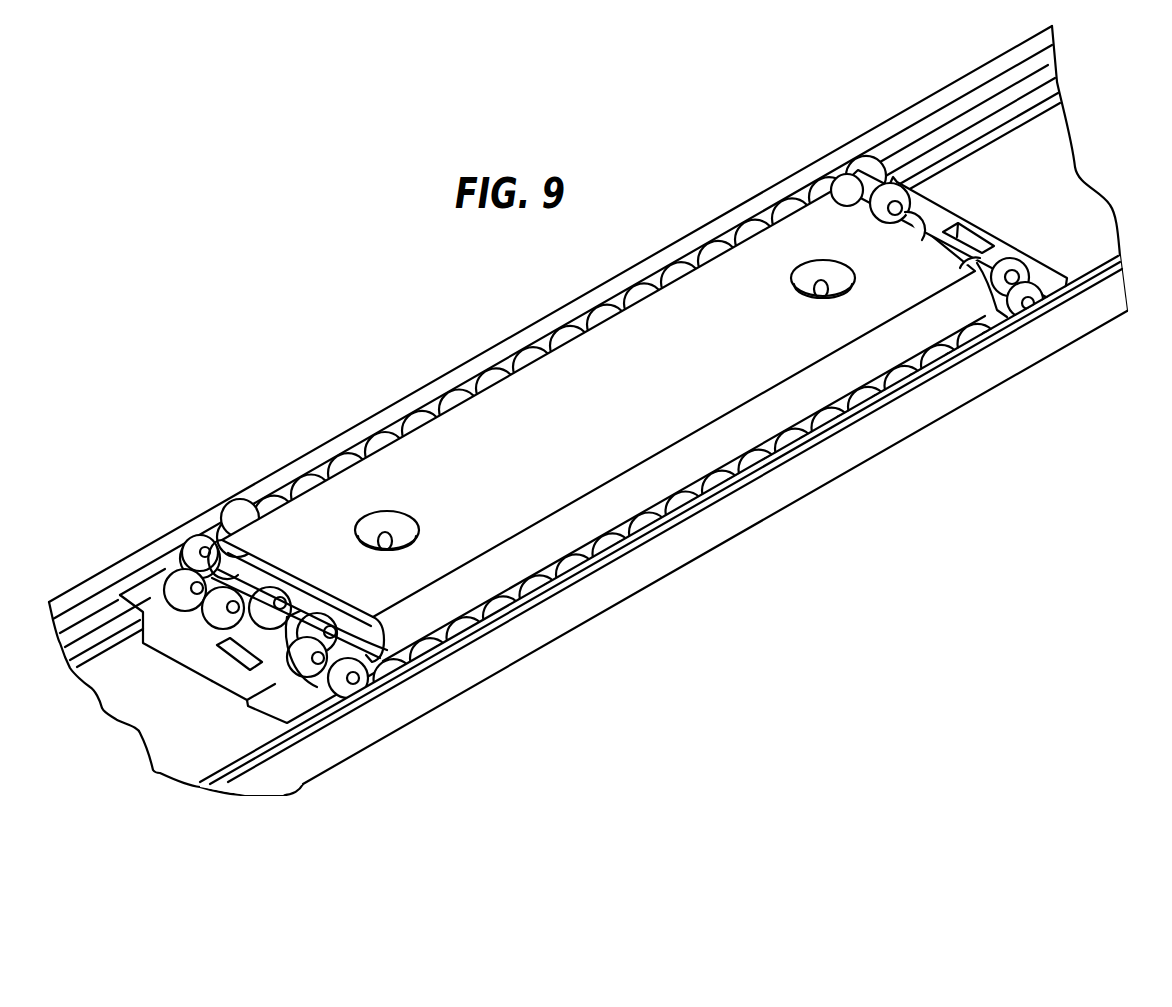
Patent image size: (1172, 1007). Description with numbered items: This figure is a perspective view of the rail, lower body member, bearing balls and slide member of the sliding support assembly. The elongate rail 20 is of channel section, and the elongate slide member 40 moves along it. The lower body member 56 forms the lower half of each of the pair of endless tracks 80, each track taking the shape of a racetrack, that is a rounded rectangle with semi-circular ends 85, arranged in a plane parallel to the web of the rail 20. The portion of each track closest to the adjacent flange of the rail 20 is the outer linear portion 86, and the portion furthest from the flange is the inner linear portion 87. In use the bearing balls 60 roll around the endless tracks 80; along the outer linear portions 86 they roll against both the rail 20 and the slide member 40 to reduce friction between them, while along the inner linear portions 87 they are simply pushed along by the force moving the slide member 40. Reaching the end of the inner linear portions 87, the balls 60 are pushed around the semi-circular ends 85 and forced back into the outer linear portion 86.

The elongate rail 20 is at (193, 743).
The slide member 40 is at (515, 492).
The lower body member 56 is at (273, 683).
The bearing balls 60 is at (334, 684).
The endless tracks 80 is at (175, 567).
The semi-circular ends 85 is at (197, 620).
The outer linear portion 86 is at (763, 447).
The inner linear portion 87 is at (300, 605).